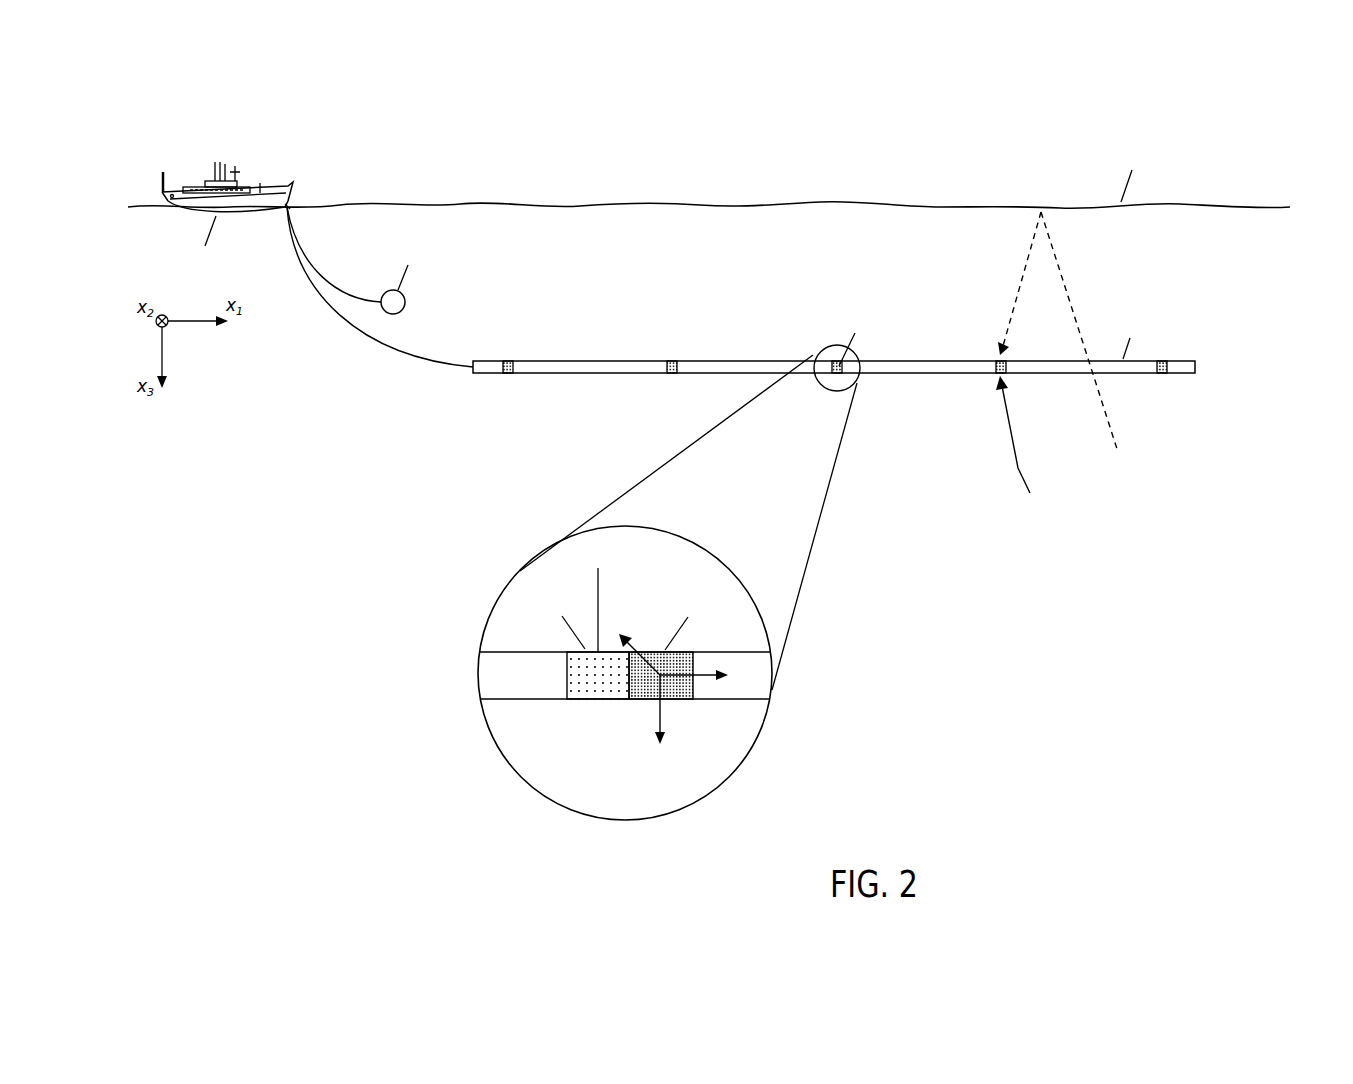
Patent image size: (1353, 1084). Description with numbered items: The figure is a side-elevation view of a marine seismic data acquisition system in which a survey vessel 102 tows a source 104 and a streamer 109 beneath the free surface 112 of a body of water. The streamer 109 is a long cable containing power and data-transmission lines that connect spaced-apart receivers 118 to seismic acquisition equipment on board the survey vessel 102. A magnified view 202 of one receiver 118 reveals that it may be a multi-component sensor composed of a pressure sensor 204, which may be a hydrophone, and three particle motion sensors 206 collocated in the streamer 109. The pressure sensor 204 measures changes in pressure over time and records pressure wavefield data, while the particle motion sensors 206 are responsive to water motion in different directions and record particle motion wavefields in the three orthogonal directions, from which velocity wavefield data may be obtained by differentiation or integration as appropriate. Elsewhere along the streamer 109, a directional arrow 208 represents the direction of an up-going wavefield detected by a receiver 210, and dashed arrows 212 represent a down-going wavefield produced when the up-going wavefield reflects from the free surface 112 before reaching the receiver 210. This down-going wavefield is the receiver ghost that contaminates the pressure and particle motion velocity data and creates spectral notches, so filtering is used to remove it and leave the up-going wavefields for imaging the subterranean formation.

The survey vessel 102 is at (261, 178).
The source 104 is at (406, 302).
The streamer 109 is at (907, 358).
The free surface 112 is at (880, 203).
The receiver 118 is at (833, 374).
The magnified view 202 is at (706, 545).
The pressure sensor 204 is at (583, 626).
The particle motion sensors 206 is at (682, 652).
The directional arrow 208 is at (1018, 470).
The receiver 210 is at (998, 376).
The dashed arrows 212 is at (1028, 252).